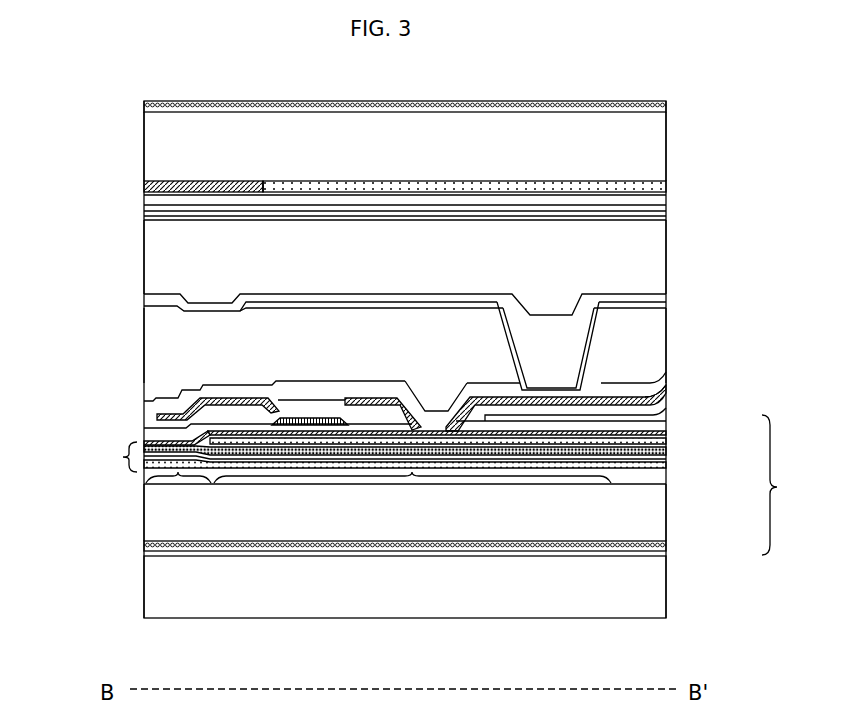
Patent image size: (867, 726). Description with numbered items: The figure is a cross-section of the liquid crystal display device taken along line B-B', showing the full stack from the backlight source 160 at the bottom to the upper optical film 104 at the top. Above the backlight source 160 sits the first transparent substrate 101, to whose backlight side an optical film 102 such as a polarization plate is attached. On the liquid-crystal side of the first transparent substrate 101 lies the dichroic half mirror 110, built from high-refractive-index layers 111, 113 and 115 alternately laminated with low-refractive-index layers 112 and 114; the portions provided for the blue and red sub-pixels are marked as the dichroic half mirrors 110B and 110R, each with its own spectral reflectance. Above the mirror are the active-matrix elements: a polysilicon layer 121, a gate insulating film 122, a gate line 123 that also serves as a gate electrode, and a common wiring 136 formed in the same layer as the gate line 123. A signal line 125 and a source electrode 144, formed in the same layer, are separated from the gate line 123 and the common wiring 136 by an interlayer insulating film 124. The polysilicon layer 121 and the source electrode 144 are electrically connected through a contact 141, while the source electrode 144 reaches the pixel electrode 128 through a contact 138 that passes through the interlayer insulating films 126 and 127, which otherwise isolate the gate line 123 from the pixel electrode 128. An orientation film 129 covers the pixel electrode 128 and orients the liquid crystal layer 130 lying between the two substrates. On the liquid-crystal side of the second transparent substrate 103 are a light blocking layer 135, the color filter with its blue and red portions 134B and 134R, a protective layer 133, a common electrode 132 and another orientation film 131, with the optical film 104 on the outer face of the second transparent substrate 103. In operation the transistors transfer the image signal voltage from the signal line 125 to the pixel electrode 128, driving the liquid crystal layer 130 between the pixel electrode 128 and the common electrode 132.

The first transparent substrate 101 is at (167, 531).
The optical film 102 is at (667, 545).
The second transparent substrate 103 is at (160, 132).
The optical film 104 is at (666, 102).
The dichroic half mirror 110 is at (454, 485).
The dichroic half mirror for blue sub-pixel 110B is at (178, 494).
The dichroic half mirror for red sub-pixel 110R is at (412, 494).
The high-refractive-index layer 111 is at (667, 465).
The low-refractive-index layer 112 is at (667, 460).
The high-refractive-index layer 113 is at (667, 453).
The low-refractive-index layer 114 is at (667, 445).
The high-refractive-index layer 115 is at (667, 432).
The polysilicon layer 121 is at (668, 417).
The gate insulating film 122 is at (145, 438).
The gate line 123 is at (302, 426).
The interlayer insulating film 124 is at (153, 428).
The signal line 125 is at (183, 400).
The interlayer insulating film 126 is at (666, 400).
The interlayer insulating film 127 is at (657, 337).
The pixel electrode 128 is at (667, 300).
The orientation film 129 is at (143, 300).
The liquid crystal layer 130 is at (657, 262).
The orientation film 131 is at (667, 213).
The common electrode 132 is at (143, 210).
The protective layer 133 is at (667, 196).
The blue color filter 134B is at (143, 190).
The red color filter 134R is at (428, 188).
The light blocking layer 135 is at (233, 183).
The common wiring 136 is at (666, 414).
The contact 138 is at (550, 395).
The contact 141 is at (446, 432).
The source electrode 144 is at (667, 393).
The backlight source 160 is at (167, 597).